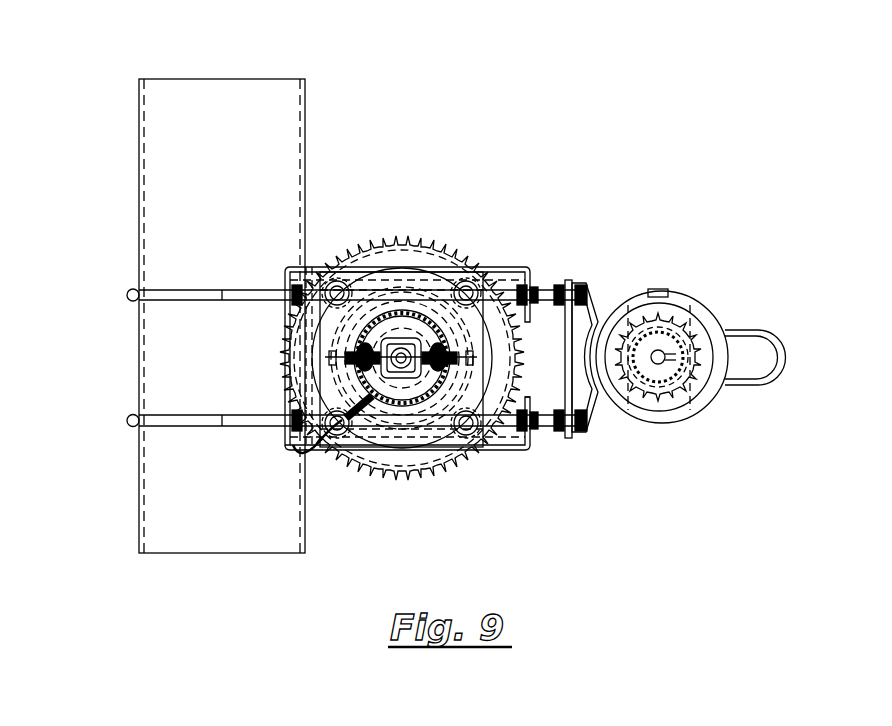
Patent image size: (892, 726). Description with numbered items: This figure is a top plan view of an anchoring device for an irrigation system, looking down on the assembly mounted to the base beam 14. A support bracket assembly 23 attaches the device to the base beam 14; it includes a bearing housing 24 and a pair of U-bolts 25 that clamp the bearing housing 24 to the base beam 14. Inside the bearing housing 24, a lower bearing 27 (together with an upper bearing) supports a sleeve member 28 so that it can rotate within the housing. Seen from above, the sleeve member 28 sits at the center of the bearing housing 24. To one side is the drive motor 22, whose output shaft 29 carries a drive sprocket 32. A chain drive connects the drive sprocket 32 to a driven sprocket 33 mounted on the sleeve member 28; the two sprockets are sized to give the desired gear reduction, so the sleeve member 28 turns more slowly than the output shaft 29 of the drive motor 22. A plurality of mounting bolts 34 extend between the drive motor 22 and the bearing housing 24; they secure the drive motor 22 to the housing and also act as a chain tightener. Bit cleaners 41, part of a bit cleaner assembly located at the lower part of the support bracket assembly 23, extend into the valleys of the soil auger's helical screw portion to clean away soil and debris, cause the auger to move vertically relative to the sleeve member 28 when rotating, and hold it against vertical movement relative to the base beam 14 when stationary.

The base beam 14 is at (163, 234).
The drive motor 22 is at (668, 425).
The support bracket assembly 23 is at (507, 451).
The bearing housing 24 is at (392, 434).
The U-bolts 25 is at (172, 297).
The lower bearing 27 is at (413, 380).
The sleeve member 28 is at (412, 372).
The output shaft 29 is at (658, 350).
The drive sprocket 32 is at (682, 318).
The driven sprocket 33 is at (437, 256).
The mounting bolts 34 is at (550, 290).
The bit cleaners 41 is at (428, 345).